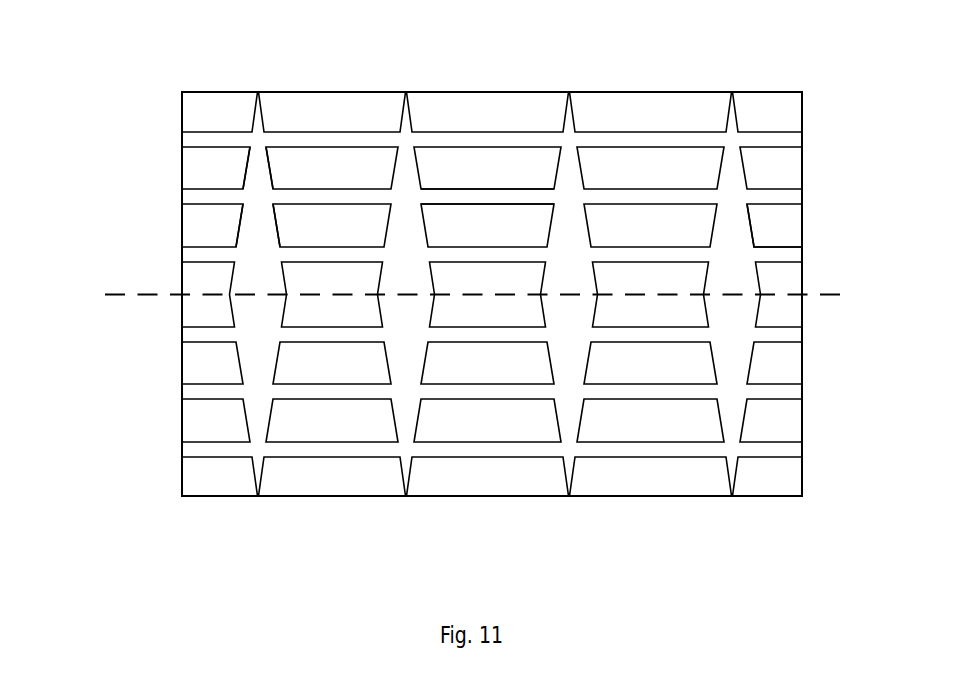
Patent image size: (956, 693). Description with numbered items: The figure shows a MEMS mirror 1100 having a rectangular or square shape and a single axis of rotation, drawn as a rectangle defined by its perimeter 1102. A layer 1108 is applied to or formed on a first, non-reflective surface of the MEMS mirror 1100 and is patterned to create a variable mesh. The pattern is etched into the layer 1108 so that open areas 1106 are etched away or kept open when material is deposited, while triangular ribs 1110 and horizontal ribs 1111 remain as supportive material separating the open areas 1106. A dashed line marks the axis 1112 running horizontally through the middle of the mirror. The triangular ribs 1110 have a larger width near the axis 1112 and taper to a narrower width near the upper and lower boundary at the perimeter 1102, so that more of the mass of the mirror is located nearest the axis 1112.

The MEMS mirror 1100 is at (455, 269).
The perimeter 1102 is at (790, 498).
The open areas 1106 is at (210, 113).
The layer 1108 is at (756, 233).
The triangular ribs 1110 is at (265, 162).
The horizontal ribs 1111 is at (483, 197).
The axis 1112 is at (445, 294).